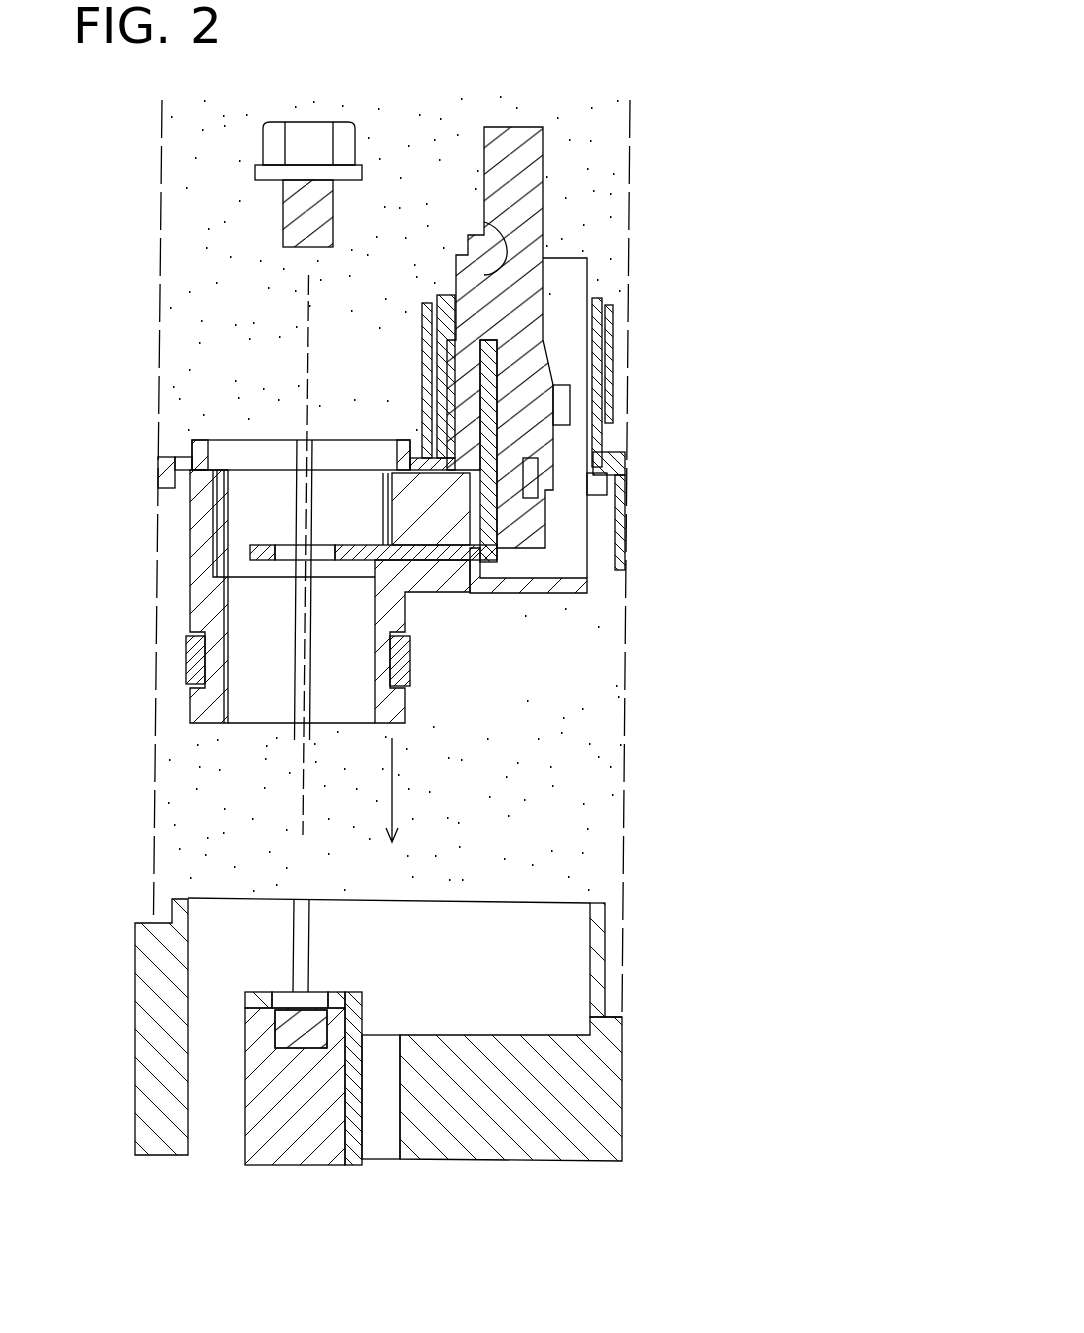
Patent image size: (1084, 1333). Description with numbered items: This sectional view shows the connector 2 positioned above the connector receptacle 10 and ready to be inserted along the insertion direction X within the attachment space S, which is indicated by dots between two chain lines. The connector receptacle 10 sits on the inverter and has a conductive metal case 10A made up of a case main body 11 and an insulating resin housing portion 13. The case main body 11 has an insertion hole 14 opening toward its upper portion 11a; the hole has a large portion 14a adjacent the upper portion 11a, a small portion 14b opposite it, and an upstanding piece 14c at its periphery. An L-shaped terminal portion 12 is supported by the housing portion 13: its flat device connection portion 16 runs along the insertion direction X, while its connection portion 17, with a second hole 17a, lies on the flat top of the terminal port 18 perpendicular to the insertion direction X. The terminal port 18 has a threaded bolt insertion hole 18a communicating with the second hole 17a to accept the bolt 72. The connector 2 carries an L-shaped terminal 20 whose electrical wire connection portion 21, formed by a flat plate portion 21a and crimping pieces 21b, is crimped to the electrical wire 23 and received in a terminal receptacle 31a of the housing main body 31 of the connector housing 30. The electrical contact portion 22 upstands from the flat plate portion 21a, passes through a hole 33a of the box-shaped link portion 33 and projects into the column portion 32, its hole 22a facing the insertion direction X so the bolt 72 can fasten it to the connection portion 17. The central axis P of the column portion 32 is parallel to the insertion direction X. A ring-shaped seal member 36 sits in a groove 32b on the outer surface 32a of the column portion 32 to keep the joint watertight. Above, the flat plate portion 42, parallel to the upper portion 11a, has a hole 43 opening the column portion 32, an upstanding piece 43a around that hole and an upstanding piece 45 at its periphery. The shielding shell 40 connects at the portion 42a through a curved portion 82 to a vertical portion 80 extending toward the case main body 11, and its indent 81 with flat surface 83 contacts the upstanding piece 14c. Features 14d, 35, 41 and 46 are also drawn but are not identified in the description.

The connector 2 is at (654, 192).
The connector receptacle 10 is at (645, 1002).
The case 10A is at (547, 1172).
The case main body 11 is at (622, 1092).
The upper portion 11a is at (614, 1012).
The terminal portion 12 is at (333, 1169).
The housing portion 13 is at (258, 1177).
The insertion hole 14 is at (577, 938).
The large portion 14a is at (590, 985).
The small portion 14b is at (388, 1150).
The upstanding piece 14c is at (177, 906).
The outer surface 14d is at (183, 1063).
The device connection portion 16 is at (352, 1165).
The connection portion 17 is at (348, 992).
The second hole 17a is at (320, 992).
The terminal port 18 is at (245, 1130).
The bolt insertion hole 18a is at (283, 1049).
The terminal 20 is at (610, 657).
The electrical wire connection portion 21 is at (507, 547).
The flat plate portion 21a is at (612, 522).
The crimping piece 21b is at (540, 472).
The electrical contact portion 22 is at (440, 562).
The hole 22a is at (268, 548).
The electrical wire 23 is at (545, 178).
The connector housing 30 is at (567, 246).
The housing main body 31 is at (587, 585).
The terminal receptacle 31a is at (484, 222).
The column portion 32 is at (400, 706).
The outer surface 32a is at (190, 607).
The groove 32b is at (190, 690).
The link portion 33 is at (443, 585).
The hole 33a is at (412, 556).
The top plate 35 is at (218, 466).
The seal member 36 is at (190, 660).
The shielding shell 40 is at (612, 289).
The lip 41 is at (606, 383).
The flat plate portion 42 is at (427, 455).
The portion 42a is at (608, 452).
The hole 43 is at (400, 462).
The upstanding piece 43a is at (426, 440).
The upstanding piece 45 is at (627, 478).
The seal lip 46 is at (615, 350).
The bolt 72 is at (312, 121).
The vertical portion 80 is at (627, 556).
The indent 81 is at (627, 505).
The curved portion 82 is at (627, 466).
The flat surface 83 is at (627, 486).
The attachment space S is at (200, 243).
The central axis P is at (308, 300).
The insertion direction X is at (393, 795).